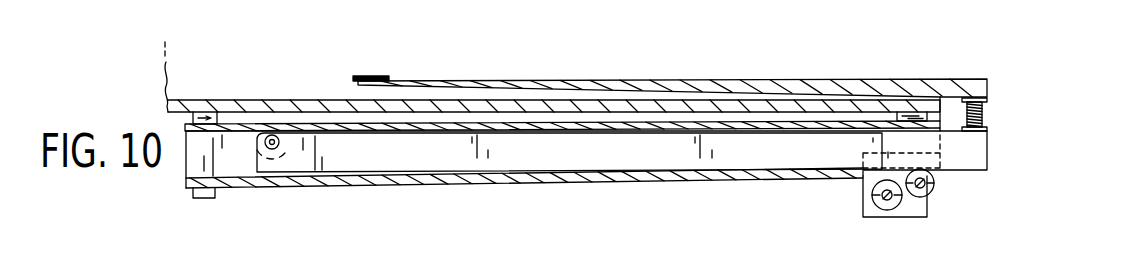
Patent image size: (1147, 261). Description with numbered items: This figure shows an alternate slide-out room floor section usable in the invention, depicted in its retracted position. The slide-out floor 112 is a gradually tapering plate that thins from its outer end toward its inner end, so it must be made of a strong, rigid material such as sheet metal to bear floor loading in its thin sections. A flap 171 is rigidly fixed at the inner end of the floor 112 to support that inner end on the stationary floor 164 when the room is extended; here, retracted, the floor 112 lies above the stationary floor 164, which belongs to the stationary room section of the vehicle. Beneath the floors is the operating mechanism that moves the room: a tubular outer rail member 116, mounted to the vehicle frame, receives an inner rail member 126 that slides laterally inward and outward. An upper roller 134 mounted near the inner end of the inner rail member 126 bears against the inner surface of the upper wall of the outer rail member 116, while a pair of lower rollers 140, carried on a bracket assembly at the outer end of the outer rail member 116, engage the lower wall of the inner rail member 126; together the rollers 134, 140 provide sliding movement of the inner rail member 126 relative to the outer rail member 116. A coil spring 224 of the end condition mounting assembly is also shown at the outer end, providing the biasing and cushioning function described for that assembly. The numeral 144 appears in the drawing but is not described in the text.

The floor 112 is at (676, 80).
The outer rail member 116 is at (237, 187).
The inner rail member 126 is at (973, 148).
The upper roller 134 is at (273, 135).
The lower roller 140 is at (927, 197).
The fastener 144 is at (887, 211).
The stationary floor 164 is at (232, 100).
The flap 171 is at (371, 77).
The coil spring 224 is at (988, 116).